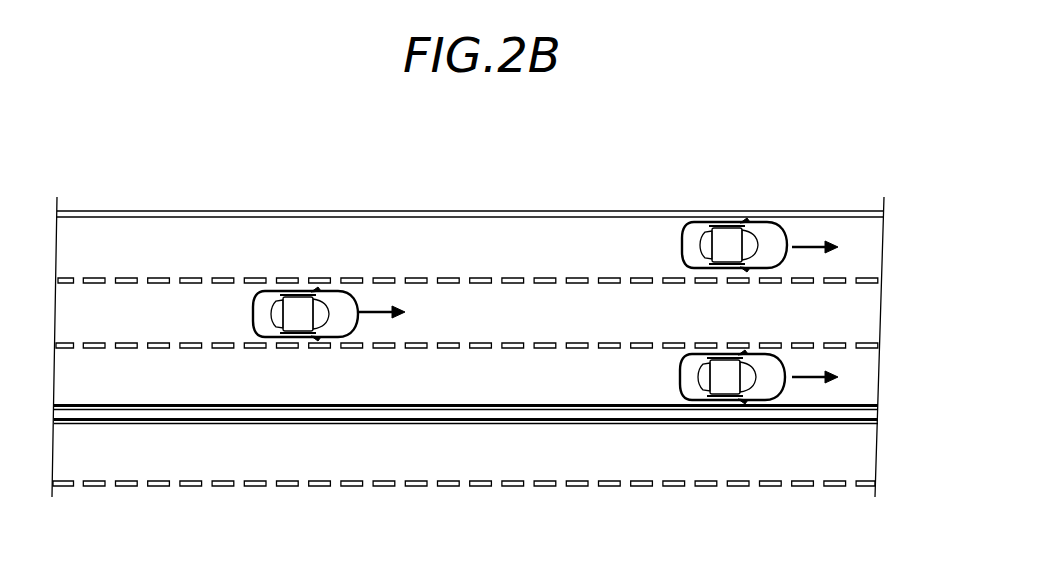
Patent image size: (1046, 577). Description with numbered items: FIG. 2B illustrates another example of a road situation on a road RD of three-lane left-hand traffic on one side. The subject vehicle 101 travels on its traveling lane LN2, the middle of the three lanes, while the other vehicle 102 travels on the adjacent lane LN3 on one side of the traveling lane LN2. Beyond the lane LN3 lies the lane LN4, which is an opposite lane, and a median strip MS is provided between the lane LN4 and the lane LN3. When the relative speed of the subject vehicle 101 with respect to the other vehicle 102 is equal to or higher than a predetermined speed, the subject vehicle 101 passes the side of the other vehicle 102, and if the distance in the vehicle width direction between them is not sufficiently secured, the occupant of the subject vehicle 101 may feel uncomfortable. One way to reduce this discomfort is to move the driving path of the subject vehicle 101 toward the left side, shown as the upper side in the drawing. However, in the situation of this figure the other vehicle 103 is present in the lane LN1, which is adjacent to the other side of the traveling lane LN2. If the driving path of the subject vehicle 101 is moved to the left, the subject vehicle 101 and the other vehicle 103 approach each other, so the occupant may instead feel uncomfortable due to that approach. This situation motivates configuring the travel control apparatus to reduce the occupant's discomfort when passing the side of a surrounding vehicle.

The subject vehicle 101 is at (292, 291).
The other vehicle 102 is at (736, 401).
The other vehicle 103 is at (729, 223).
The road RD is at (811, 206).
The lane LN1 is at (850, 260).
The lane LN2 is at (850, 327).
The lane LN3 is at (850, 392).
The lane LN4 is at (850, 457).
The median strip MS is at (858, 412).